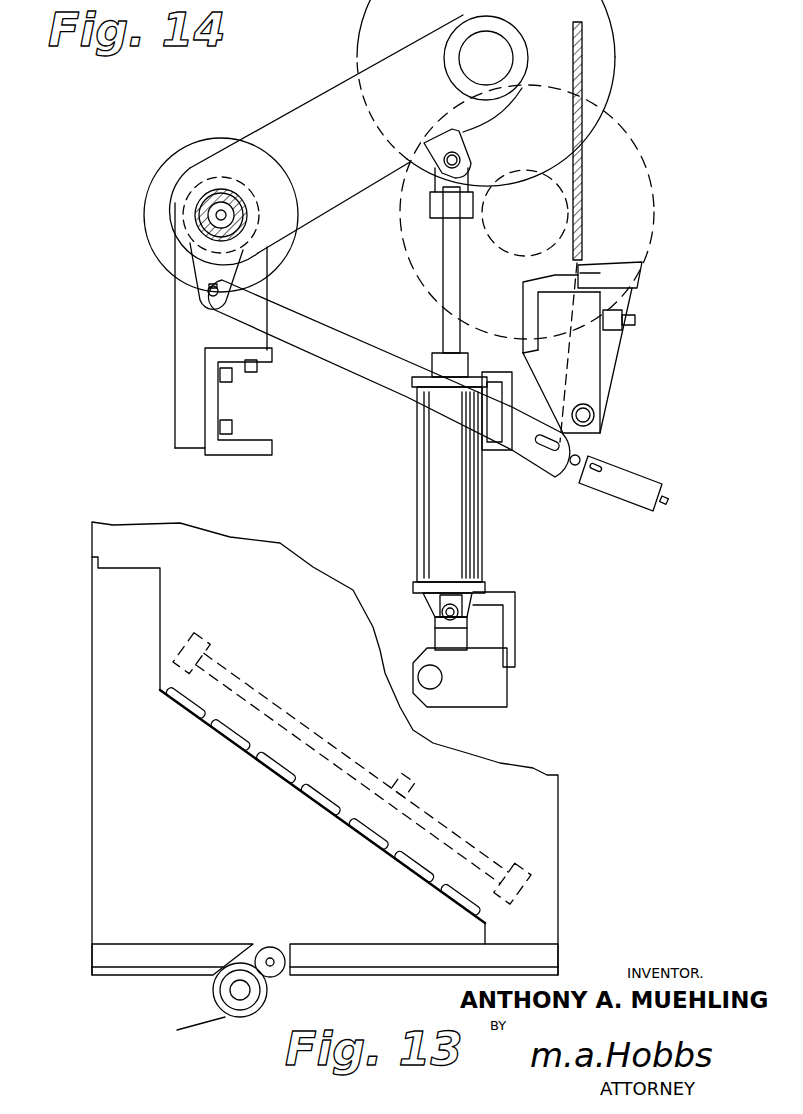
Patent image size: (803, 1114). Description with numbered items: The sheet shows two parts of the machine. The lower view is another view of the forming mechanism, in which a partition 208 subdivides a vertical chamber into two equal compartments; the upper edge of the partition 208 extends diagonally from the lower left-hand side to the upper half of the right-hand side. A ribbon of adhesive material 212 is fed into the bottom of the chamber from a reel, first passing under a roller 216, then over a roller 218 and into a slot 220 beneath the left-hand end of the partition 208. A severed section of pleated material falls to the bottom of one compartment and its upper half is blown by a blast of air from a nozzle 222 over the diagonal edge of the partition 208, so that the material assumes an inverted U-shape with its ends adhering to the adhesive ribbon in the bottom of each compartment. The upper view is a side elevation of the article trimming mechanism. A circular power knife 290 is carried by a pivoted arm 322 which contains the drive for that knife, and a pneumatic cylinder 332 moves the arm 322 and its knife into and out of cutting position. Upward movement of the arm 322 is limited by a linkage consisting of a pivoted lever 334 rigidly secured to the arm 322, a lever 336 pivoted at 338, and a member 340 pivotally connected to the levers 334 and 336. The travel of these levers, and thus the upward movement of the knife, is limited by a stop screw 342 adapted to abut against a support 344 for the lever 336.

In FIG. 13, the partition 208 is at (100, 808).
In FIG. 13, the ribbon of adhesive material 212 is at (227, 1013).
In FIG. 13, the roller 216 is at (255, 997).
In FIG. 13, the roller 218 is at (271, 947).
In FIG. 13, the slot 220 is at (388, 944).
In FIG. 13, the nozzle 222 is at (367, 832).
In FIG. 14, the circular power knife 290 is at (633, 186).
In FIG. 14, the pivoted arm 322 is at (295, 114).
In FIG. 14, the pneumatic cylinder 332 is at (470, 526).
In FIG. 14, the pivoted lever 334 is at (202, 264).
In FIG. 14, the lever 336 is at (610, 356).
In FIG. 14, the pivot 338 is at (596, 416).
In FIG. 14, the member 340 is at (348, 358).
In FIG. 14, the stop screw 342 is at (632, 312).
In FIG. 14, the support 344 is at (593, 348).